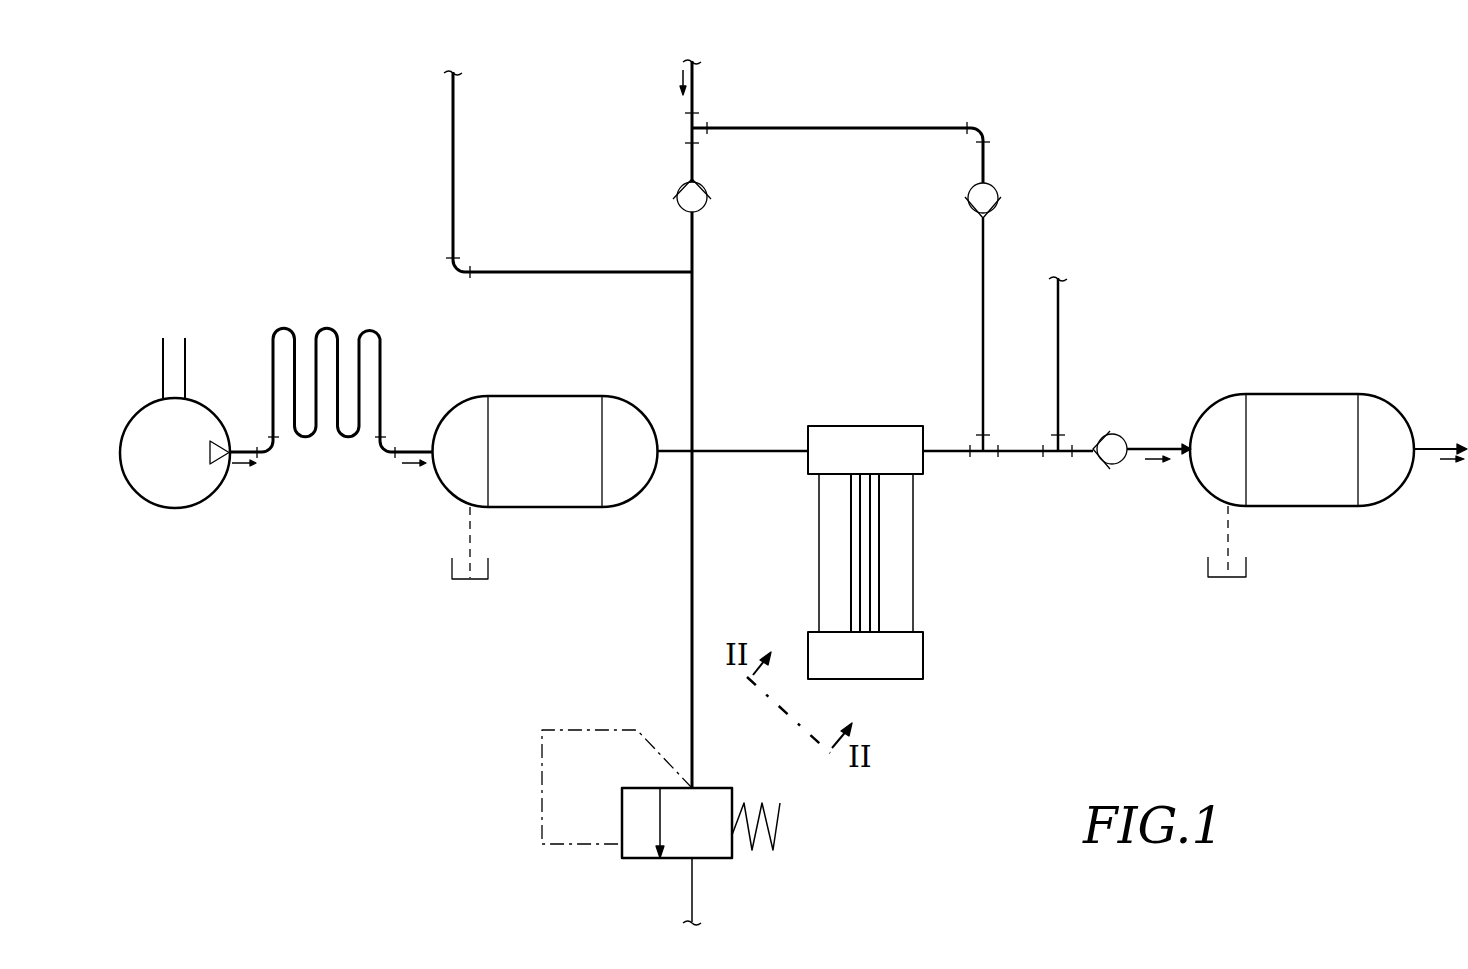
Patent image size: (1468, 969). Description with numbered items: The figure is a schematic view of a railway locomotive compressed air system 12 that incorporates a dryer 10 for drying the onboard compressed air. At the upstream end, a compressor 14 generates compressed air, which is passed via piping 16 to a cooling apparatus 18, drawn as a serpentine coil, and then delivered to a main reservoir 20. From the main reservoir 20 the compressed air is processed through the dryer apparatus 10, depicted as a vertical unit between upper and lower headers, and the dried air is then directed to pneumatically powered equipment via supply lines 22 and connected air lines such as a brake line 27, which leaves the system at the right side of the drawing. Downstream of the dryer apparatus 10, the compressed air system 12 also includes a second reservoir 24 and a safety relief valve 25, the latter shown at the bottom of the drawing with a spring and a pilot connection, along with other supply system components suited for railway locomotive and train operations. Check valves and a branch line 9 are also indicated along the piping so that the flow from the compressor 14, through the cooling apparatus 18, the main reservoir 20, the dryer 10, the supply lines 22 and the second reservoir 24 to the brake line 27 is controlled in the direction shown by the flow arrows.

The line 9 is at (1056, 306).
The dryer 10 is at (954, 584).
The compressed air system 12 is at (1104, 383).
The compressor 14 is at (154, 492).
The piping 16 is at (248, 447).
The cooling apparatus 18 is at (335, 305).
The main reservoir 20 is at (533, 402).
The supply lines 22 is at (1013, 453).
The second reservoir 24 is at (1297, 497).
The safety relief valve 25 is at (634, 856).
The brake line 27 is at (1437, 446).